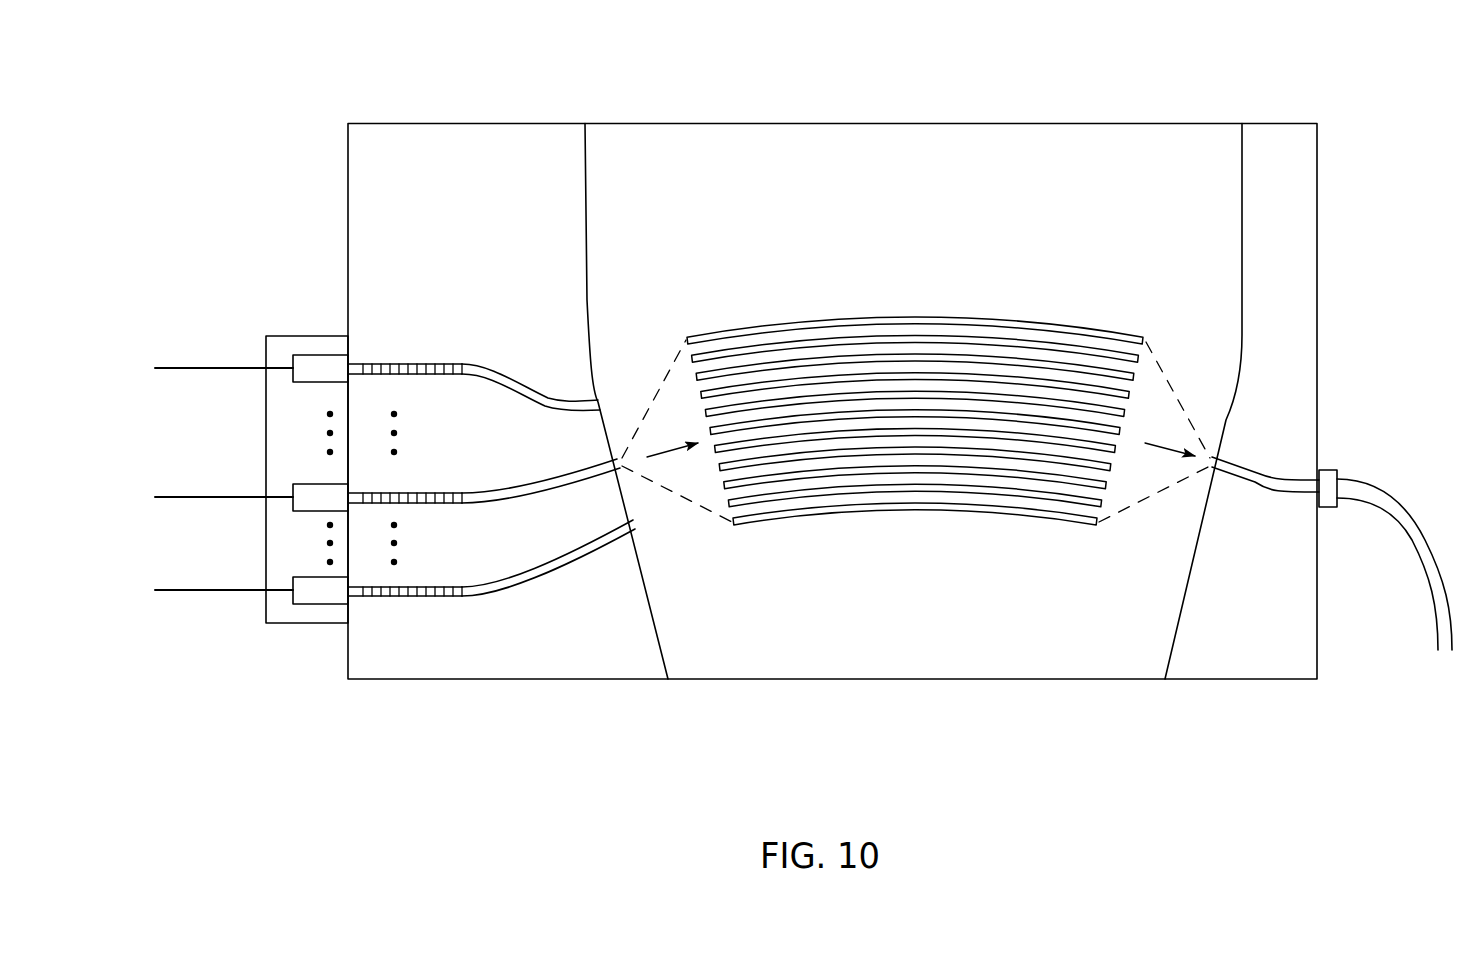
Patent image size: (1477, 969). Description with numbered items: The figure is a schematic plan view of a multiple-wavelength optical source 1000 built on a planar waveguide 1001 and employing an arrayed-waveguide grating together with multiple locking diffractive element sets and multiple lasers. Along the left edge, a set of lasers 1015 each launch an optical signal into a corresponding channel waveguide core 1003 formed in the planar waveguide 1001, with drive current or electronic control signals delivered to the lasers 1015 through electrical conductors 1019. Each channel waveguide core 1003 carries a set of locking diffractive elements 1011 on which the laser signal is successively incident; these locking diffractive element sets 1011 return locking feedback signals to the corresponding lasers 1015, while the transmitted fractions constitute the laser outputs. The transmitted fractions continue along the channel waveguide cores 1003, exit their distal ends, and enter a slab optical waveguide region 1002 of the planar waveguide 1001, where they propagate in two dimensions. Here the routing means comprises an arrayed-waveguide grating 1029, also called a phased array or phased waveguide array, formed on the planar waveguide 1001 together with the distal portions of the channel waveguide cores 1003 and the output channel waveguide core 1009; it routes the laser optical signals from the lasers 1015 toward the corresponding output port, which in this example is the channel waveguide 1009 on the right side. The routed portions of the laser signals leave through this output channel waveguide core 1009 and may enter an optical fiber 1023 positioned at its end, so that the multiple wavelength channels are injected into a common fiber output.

The multiple-wavelength optical source 1000 is at (295, 762).
The planar waveguide 1001 is at (430, 147).
The slab optical waveguide region 1002 is at (948, 195).
The channel waveguide cores 1003 is at (582, 407).
The channel waveguide core 1009 is at (1245, 472).
The locking diffractive element sets 1011 is at (437, 500).
The lasers 1015 is at (315, 498).
The electrical conductors 1019 is at (212, 372).
The optical fiber 1023 is at (1425, 550).
The arrayed-waveguide grating 1029 is at (1065, 303).